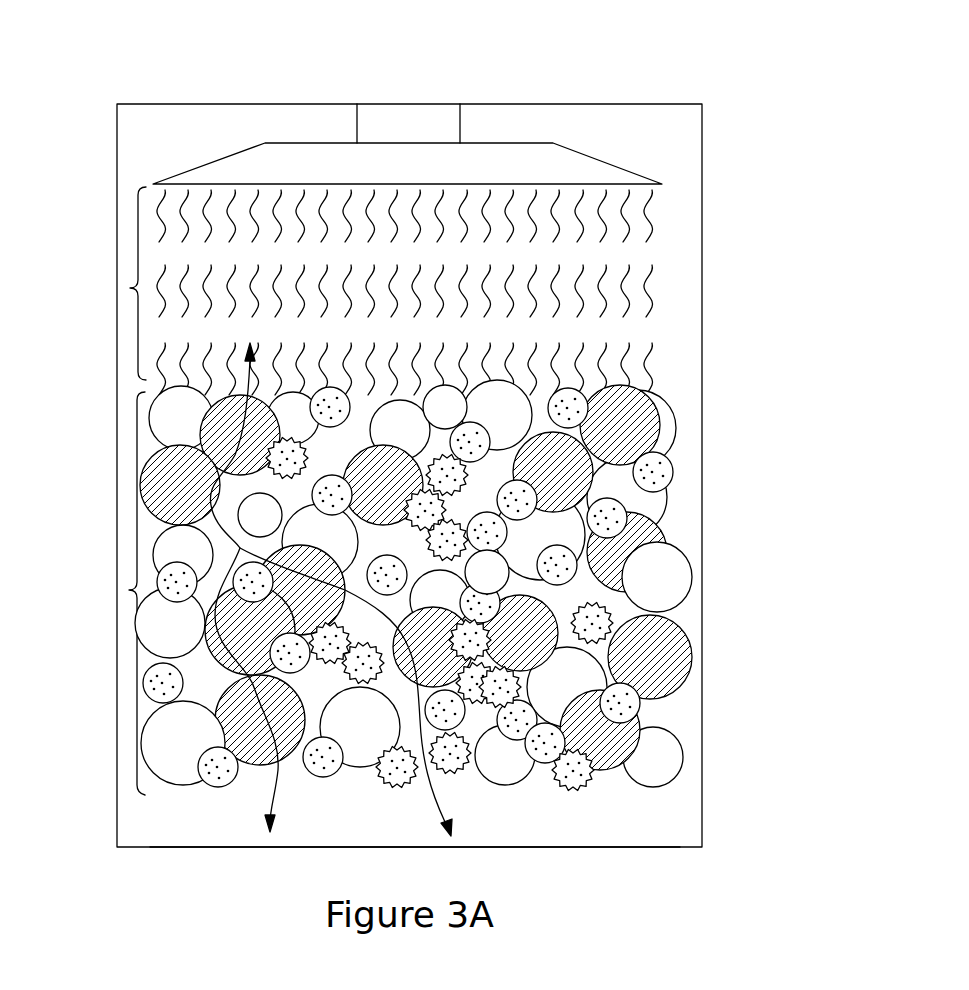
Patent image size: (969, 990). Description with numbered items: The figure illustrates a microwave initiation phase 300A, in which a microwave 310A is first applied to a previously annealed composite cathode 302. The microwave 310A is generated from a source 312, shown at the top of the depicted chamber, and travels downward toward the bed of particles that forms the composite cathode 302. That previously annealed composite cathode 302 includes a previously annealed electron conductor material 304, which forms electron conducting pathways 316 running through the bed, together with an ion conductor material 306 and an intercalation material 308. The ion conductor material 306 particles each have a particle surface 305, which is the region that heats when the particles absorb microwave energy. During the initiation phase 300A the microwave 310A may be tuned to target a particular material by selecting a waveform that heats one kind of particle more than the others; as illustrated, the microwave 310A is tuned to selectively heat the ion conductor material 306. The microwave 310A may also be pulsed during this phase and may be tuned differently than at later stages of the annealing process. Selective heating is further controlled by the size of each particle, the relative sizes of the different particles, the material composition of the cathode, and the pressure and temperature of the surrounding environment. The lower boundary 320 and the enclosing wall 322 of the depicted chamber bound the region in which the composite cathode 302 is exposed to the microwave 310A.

The microwave initiation phase 300A is at (591, 80).
The previously annealed composite cathode 302 is at (388, 587).
The previously annealed electron conductor material 304 is at (400, 484).
The particle surface 305 is at (378, 652).
The ion conductor material 306 is at (276, 524).
The intercalation material 308 is at (375, 732).
The microwave 310A is at (369, 291).
The source 312 is at (598, 164).
The electron conducting pathways 316 is at (198, 478).
The vessel floor 320 is at (210, 847).
The vessel wall 322 is at (117, 800).